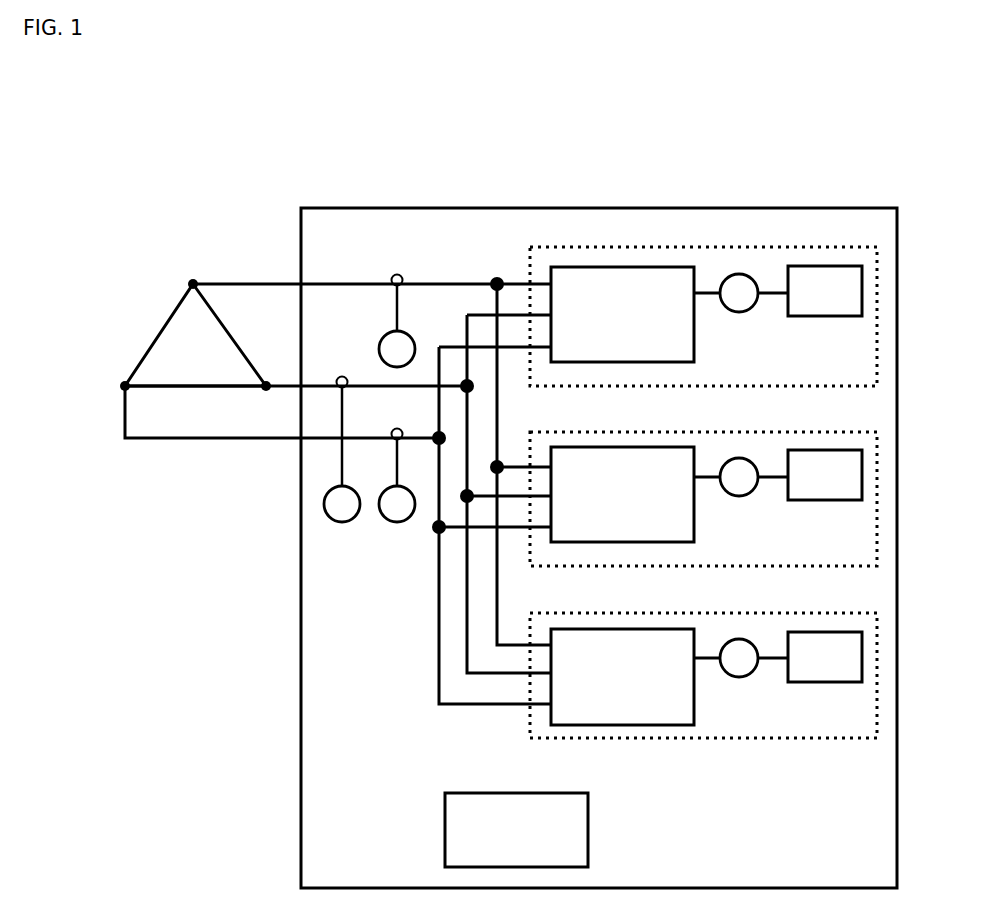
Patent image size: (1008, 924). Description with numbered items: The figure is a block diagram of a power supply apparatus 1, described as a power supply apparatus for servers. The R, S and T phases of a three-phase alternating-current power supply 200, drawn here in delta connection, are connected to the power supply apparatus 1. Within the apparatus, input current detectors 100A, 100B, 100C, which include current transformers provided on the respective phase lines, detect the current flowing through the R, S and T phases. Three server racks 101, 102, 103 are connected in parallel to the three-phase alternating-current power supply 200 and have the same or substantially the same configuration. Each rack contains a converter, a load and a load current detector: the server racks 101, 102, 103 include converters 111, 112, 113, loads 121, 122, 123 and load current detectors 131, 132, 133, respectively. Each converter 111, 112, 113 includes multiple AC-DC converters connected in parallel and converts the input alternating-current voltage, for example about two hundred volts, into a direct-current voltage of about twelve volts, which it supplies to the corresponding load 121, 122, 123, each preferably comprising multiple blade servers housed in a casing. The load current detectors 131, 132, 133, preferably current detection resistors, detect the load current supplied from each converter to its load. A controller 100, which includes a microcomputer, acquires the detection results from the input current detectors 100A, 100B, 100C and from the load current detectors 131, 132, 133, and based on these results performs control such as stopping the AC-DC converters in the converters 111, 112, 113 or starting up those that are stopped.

The power supply apparatus 1 is at (320, 208).
The three-phase alternating-current power supply 200 is at (170, 249).
The input current detector 100A is at (383, 338).
The input current detector 100B is at (346, 523).
The input current detector 100C is at (401, 523).
The server rack 101 is at (840, 246).
The server rack 102 is at (866, 418).
The server rack 103 is at (850, 612).
The converter 111 is at (652, 266).
The converter 112 is at (652, 446).
The converter 113 is at (652, 628).
The load 121 is at (813, 266).
The load 122 is at (813, 450).
The load 123 is at (813, 632).
The load current detector 131 is at (740, 313).
The load current detector 132 is at (740, 497).
The load current detector 133 is at (740, 678).
The controller 100 is at (589, 820).